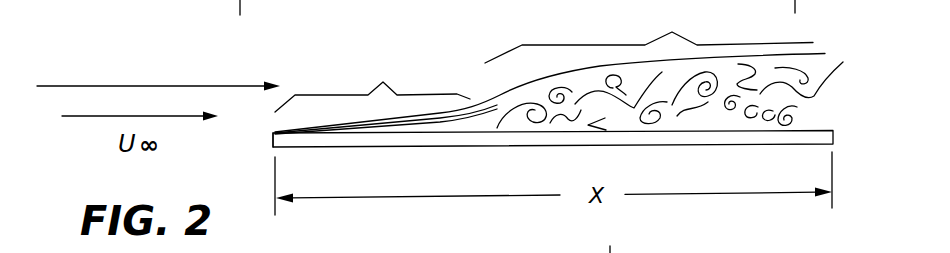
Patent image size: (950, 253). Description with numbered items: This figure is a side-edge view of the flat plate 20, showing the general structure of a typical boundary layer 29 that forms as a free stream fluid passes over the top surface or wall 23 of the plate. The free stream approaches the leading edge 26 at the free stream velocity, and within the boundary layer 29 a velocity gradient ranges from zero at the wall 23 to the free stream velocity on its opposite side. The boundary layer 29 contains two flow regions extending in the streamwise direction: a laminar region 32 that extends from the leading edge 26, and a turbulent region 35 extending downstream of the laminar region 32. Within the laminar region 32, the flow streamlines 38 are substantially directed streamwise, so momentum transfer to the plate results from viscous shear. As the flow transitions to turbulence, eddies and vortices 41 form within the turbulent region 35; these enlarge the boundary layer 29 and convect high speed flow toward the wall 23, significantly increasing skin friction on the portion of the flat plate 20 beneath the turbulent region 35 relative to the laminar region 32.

The flat plate 20 is at (820, 138).
The top surface or wall 23 is at (457, 133).
The leading edge 26 is at (273, 134).
The boundary layer 29 is at (846, 100).
The laminar region 32 is at (550, 90).
The turbulent region 35 is at (649, 34).
The flow streamlines 38 is at (370, 123).
The eddies and vortices 41 is at (595, 104).